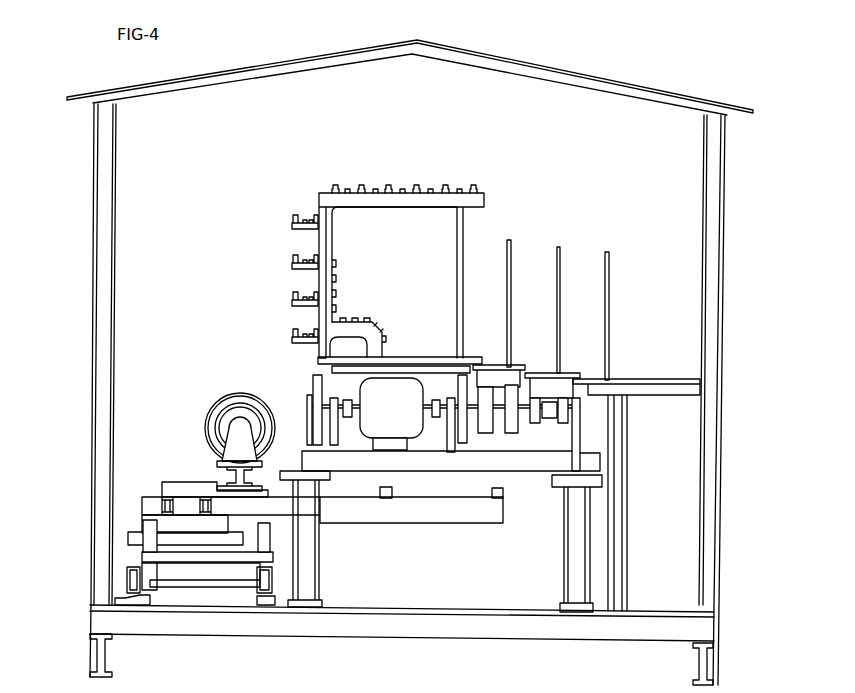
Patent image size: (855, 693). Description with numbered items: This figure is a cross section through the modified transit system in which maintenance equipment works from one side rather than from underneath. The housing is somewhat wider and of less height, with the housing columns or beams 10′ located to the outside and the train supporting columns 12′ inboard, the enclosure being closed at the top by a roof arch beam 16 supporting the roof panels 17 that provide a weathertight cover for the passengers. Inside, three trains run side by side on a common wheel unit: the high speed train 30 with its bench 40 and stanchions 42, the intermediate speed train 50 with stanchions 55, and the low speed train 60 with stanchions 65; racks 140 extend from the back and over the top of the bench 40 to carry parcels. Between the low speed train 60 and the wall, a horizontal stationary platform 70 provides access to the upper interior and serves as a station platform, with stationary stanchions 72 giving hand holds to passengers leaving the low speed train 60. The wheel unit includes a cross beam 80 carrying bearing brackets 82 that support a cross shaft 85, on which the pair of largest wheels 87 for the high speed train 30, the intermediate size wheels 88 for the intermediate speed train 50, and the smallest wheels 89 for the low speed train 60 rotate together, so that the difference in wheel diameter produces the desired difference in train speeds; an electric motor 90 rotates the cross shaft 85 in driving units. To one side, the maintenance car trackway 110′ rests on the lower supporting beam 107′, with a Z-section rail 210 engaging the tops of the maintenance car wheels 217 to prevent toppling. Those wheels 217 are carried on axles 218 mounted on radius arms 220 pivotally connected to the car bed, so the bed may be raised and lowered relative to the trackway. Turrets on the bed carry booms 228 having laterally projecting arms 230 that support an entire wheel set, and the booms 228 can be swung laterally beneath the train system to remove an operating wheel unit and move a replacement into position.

The housing columns or beams 10′ is at (399, 353).
The train supporting columns 12′ is at (90, 471).
The roof arch beam 16 is at (394, 58).
The roof panels 17 is at (362, 48).
The high speed train 30 is at (395, 330).
The bench 40 is at (355, 318).
The stanchions 42 is at (463, 228).
The intermediate speed train 50 is at (495, 358).
The stanchions 55 is at (511, 257).
The low speed train 60 is at (546, 366).
The stanchions 65 is at (561, 258).
The stationary platform 70 is at (652, 379).
The stationary stanchions 72 is at (610, 263).
The cross beam 80 is at (222, 480).
The bearing brackets 82 is at (243, 430).
The cross shaft 85 is at (500, 415).
The largest wheels 87 is at (238, 394).
The intermediate size wheels 88 is at (225, 412).
The smallest wheels 89 is at (229, 426).
The electric motor 90 is at (400, 413).
The lower supporting beam 107′ is at (323, 628).
The maintenance car trackway 110′ is at (147, 598).
The racks 140 is at (415, 186).
The rail 210 is at (128, 586).
The wheels 217 is at (138, 580).
The axles 218 is at (202, 585).
The radius arms 220 is at (145, 528).
The booms 228 is at (427, 513).
The arms 230 is at (385, 500).